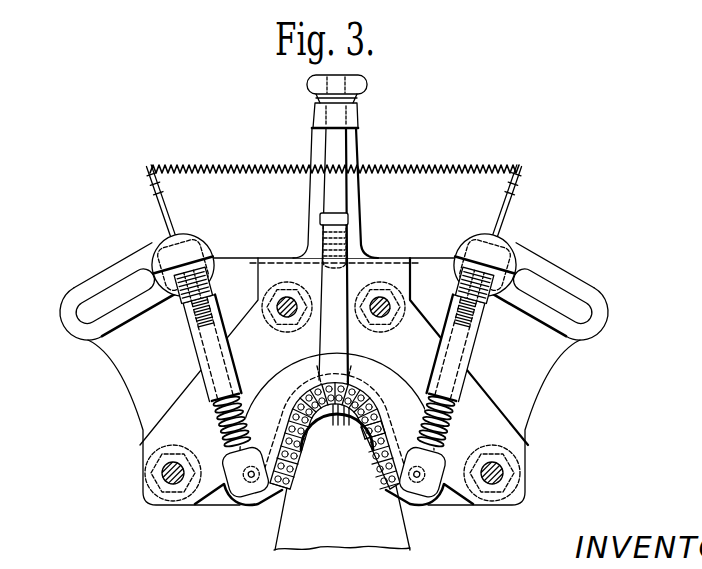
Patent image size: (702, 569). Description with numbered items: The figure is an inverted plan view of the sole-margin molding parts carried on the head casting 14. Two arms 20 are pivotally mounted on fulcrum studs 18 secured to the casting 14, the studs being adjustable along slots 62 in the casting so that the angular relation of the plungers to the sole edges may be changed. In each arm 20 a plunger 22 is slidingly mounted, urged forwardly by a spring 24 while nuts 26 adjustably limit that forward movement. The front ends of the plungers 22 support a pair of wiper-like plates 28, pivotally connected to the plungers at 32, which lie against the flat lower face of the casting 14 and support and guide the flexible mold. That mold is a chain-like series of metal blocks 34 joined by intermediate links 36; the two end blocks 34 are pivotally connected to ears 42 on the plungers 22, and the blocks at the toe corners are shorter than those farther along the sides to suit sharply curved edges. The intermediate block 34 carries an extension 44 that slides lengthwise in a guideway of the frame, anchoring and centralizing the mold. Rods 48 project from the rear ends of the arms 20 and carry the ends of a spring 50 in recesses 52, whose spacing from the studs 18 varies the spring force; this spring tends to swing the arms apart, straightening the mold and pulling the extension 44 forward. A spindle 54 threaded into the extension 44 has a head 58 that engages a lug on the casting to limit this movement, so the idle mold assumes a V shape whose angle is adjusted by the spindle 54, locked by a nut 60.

The head casting 14 is at (393, 268).
The studs 18 is at (163, 248).
The arms 20 is at (195, 348).
The plunger 22 is at (210, 377).
The spring 24 is at (222, 422).
The nuts 26 is at (210, 283).
The plates 28 is at (352, 380).
The pivotal connections 32 is at (248, 475).
The metal blocks 34 is at (378, 468).
The intermediate links 36 is at (390, 423).
The ears 42 is at (273, 487).
The extension 44 is at (325, 335).
The rods 48 is at (165, 210).
The spring 50 is at (413, 162).
The recesses 52 is at (160, 188).
The spindle 54 is at (327, 140).
The head 58 is at (365, 85).
The nut 60 is at (320, 218).
The slots 62 is at (85, 312).